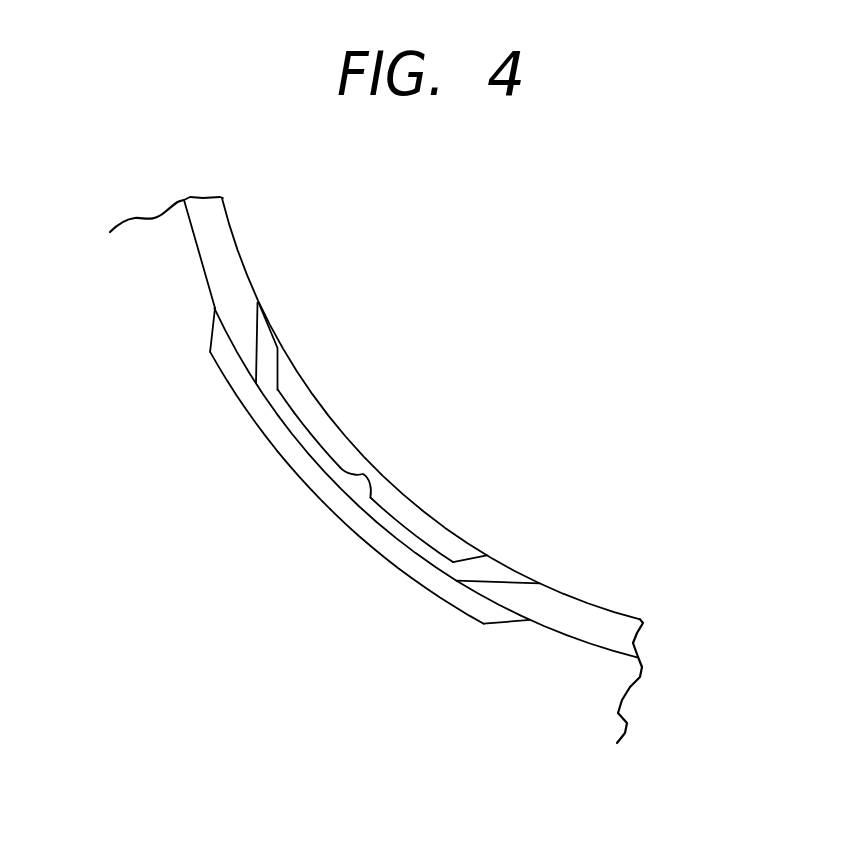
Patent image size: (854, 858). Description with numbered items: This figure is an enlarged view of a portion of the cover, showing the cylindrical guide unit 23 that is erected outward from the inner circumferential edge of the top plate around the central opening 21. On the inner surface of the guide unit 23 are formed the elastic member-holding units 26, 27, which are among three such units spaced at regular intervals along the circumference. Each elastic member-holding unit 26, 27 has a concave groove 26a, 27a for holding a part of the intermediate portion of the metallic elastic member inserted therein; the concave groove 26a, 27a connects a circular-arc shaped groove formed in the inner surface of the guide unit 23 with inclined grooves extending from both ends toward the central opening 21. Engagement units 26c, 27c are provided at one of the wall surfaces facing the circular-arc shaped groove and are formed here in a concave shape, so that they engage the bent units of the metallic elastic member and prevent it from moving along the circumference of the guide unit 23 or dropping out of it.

The central opening 21 is at (325, 407).
The guide unit 23 is at (230, 258).
The elastic member-holding unit 26 is at (312, 501).
The elastic member-holding unit 27 is at (312, 501).
The concave groove 26a is at (312, 466).
The concave groove 27a is at (325, 462).
The engagement unit 26c is at (435, 476).
The engagement unit 27c is at (369, 468).